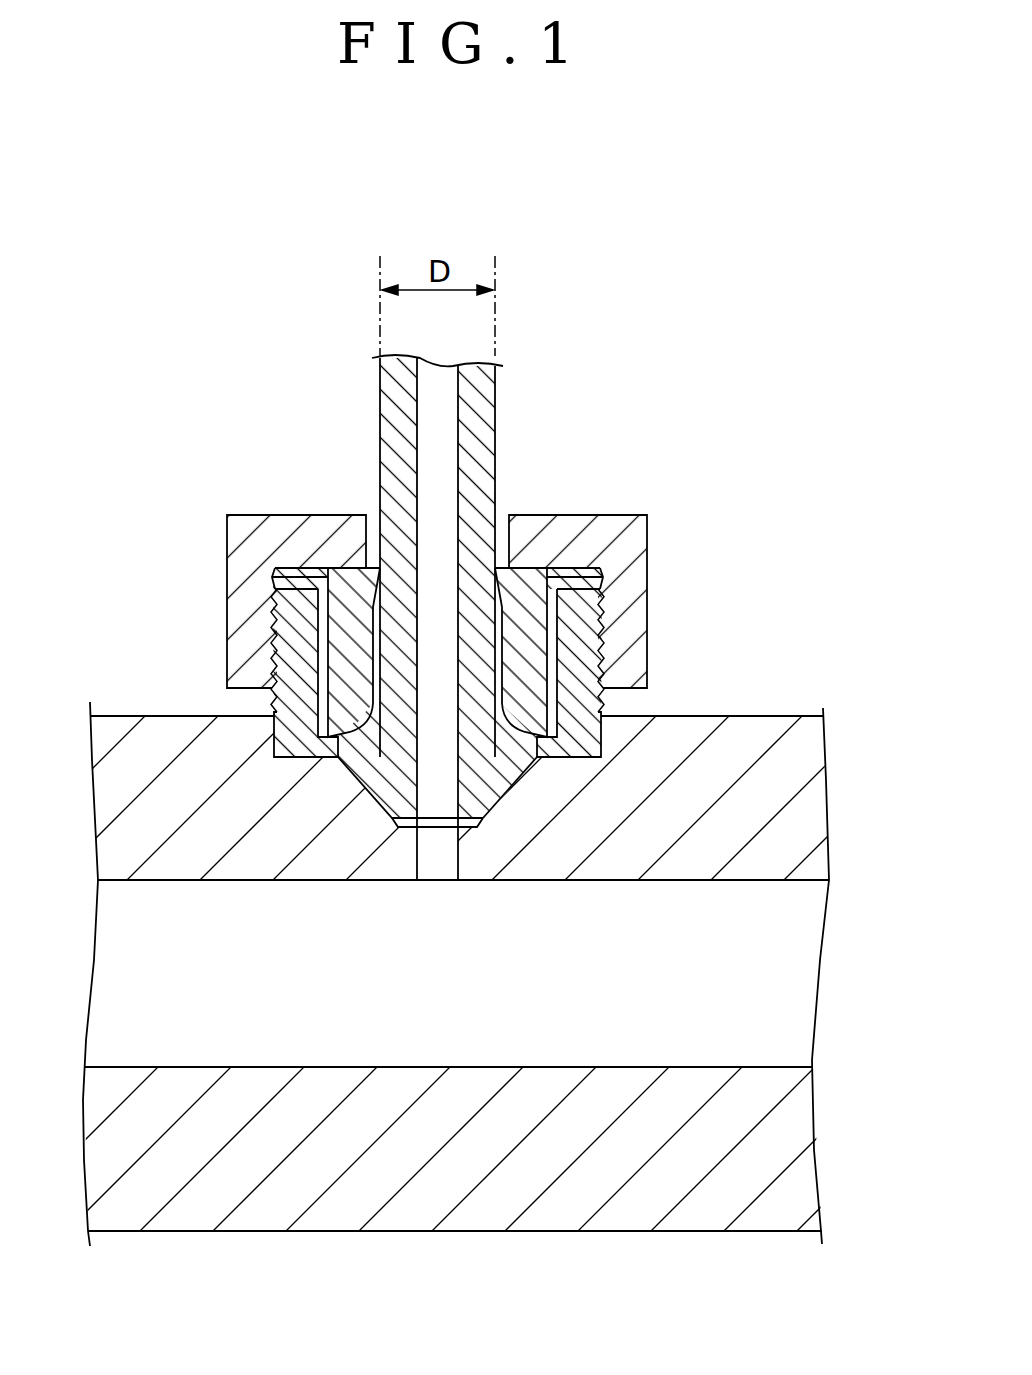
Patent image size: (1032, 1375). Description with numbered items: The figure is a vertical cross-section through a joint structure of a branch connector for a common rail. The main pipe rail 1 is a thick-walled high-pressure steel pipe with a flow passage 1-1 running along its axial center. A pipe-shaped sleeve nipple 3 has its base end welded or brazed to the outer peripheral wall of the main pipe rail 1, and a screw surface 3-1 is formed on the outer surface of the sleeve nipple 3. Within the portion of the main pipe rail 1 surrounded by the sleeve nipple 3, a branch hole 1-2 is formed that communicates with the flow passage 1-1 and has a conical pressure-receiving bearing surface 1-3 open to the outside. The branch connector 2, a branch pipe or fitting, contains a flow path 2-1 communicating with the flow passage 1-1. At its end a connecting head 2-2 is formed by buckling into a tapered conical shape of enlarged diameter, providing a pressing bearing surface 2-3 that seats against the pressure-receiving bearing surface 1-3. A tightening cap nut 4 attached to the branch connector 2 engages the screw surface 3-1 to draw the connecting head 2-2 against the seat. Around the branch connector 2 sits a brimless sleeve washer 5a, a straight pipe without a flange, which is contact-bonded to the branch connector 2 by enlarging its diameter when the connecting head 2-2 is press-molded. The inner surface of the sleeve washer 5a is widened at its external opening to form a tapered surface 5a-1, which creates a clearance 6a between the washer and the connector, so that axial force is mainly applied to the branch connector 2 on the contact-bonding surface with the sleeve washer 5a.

The main pipe rail 1 is at (805, 760).
The flow passage 1-1 is at (767, 880).
The branch hole 1-2 is at (435, 857).
The pressure-receiving bearing surface 1-3 is at (391, 816).
The branch connector 2 is at (385, 659).
The flow path 2-1 is at (438, 381).
The connecting head 2-2 is at (368, 776).
The pressing bearing surface 2-3 is at (497, 790).
The sleeve nipple 3 is at (422, 662).
The screw surface 3-1 is at (276, 653).
The tightening cap nut 4 is at (638, 538).
The sleeve washer 5a is at (568, 573).
The tapered surface 5a-1 is at (496, 572).
The clearance 6a is at (375, 596).